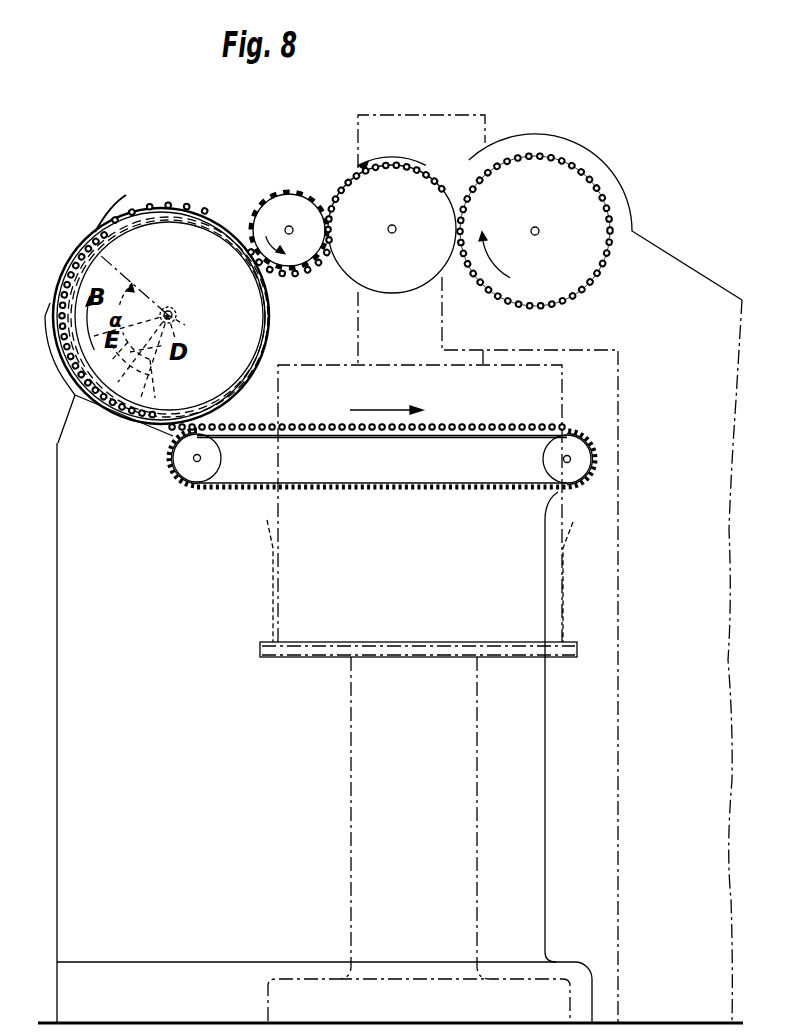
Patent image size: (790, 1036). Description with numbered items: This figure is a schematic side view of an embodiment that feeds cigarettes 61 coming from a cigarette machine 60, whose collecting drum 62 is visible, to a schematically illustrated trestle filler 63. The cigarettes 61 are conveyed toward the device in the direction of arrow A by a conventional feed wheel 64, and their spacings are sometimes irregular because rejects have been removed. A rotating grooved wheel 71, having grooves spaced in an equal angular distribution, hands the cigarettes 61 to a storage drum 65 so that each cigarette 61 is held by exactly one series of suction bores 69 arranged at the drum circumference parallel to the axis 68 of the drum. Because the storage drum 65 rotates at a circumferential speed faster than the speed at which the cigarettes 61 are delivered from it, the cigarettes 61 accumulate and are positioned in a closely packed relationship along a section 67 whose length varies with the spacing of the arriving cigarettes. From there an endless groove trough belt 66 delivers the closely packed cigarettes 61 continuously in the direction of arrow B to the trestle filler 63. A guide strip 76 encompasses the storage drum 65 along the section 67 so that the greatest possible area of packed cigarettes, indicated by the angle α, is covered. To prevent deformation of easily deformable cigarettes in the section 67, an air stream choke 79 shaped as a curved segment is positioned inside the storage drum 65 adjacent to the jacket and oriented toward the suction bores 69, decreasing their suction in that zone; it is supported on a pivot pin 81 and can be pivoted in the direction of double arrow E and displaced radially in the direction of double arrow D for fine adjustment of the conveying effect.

The cigarette machine 60 is at (647, 241).
The cigarettes 61 is at (148, 206).
The collecting drum 62 is at (580, 183).
The trestle filler 63 is at (258, 547).
The feed wheel 64 is at (357, 159).
The storage drum 65 is at (190, 233).
The endless groove trough belt 66 is at (441, 493).
The section of closely packed cigarettes 67 is at (76, 397).
The axis of the drum 68 is at (172, 311).
The suction bores 69 is at (106, 228).
The grooved wheel 71 is at (277, 210).
The guide strip 76 is at (118, 235).
The air stream choke 79 is at (146, 389).
The pivot pin 81 is at (176, 324).